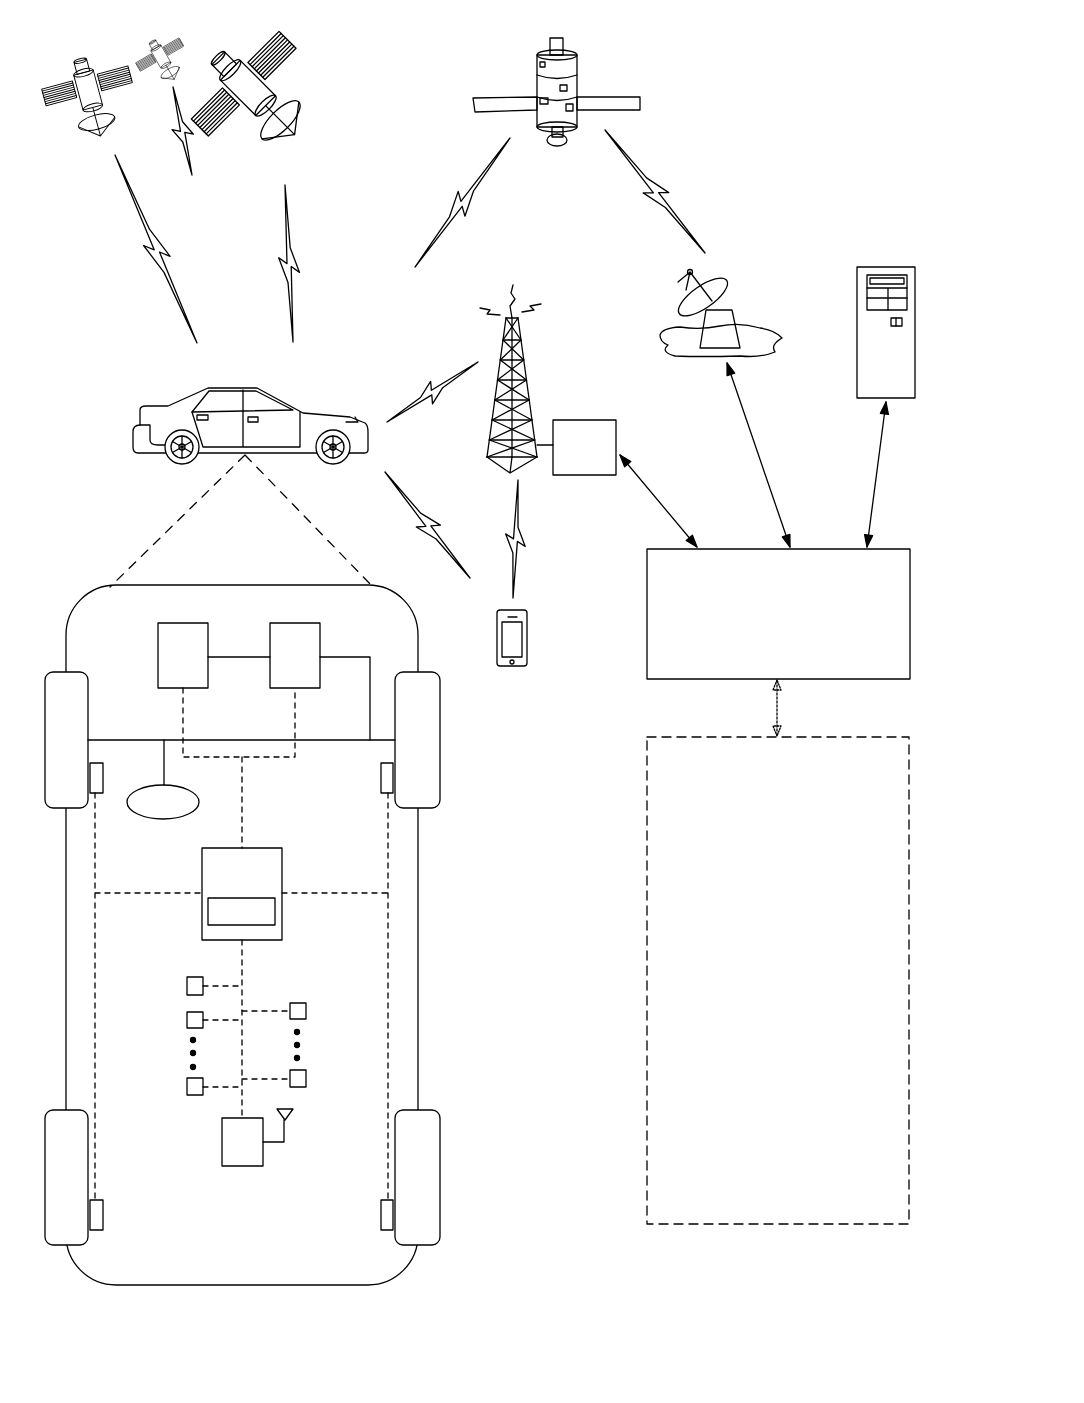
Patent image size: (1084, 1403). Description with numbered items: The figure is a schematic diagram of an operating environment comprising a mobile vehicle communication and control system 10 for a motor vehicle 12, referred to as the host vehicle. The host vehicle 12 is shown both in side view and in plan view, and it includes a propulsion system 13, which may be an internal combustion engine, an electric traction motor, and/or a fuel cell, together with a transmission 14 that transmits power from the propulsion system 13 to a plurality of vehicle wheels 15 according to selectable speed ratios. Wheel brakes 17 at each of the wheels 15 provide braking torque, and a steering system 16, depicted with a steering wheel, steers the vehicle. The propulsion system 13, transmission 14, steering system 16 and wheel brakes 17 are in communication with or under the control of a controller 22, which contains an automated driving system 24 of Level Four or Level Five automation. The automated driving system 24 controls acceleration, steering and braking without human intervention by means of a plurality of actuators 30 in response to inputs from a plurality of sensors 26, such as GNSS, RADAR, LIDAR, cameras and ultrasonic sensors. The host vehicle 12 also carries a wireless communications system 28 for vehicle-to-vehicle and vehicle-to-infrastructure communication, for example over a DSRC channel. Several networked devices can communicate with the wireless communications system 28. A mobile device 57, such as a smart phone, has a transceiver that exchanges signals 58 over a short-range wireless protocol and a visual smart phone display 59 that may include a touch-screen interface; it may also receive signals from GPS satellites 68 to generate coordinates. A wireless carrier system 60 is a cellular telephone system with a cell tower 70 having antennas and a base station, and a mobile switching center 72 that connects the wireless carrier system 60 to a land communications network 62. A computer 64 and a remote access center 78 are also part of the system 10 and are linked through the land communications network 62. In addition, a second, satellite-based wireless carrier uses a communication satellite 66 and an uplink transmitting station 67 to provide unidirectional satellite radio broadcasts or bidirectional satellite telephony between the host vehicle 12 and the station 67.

The mobile vehicle communication and control system 10 is at (820, 150).
The motor vehicle 12 is at (136, 420).
The propulsion system 13 is at (158, 655).
The transmission 14 is at (320, 642).
The vehicle wheels 15 is at (88, 698).
The steering system 16 is at (160, 819).
The wheel brakes 17 is at (97, 795).
The controller 22 is at (272, 917).
The automated driving system 24 is at (262, 925).
The sensors 26 is at (187, 985).
The wireless communications system 28 is at (243, 1166).
The actuators 30 is at (306, 1011).
The mobile device 57 is at (536, 666).
The signals 58 is at (406, 500).
The visual smart phone display 59 is at (512, 640).
The wireless carrier system 60 is at (532, 441).
The land communications network 62 is at (910, 618).
The computer 64 is at (915, 330).
The communication satellite 66 is at (580, 72).
The uplink transmitting station 67 is at (755, 330).
The GPS satellites 68 is at (318, 68).
The cell tower 70 is at (523, 370).
The mobile switching center 72 is at (616, 426).
The remote access center 78 is at (785, 1227).